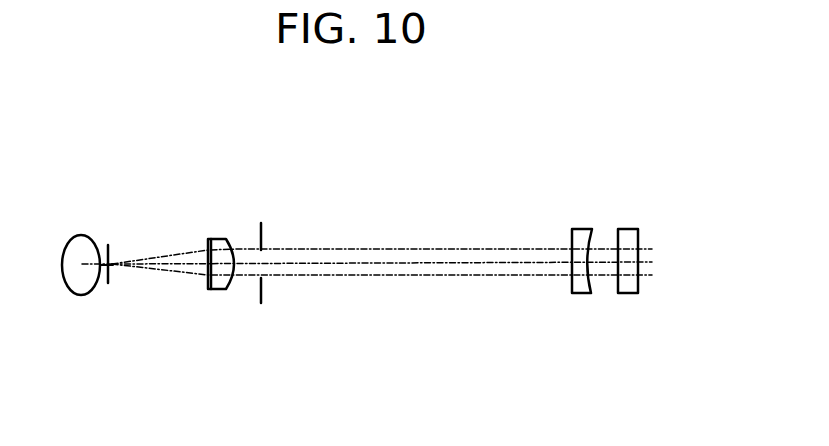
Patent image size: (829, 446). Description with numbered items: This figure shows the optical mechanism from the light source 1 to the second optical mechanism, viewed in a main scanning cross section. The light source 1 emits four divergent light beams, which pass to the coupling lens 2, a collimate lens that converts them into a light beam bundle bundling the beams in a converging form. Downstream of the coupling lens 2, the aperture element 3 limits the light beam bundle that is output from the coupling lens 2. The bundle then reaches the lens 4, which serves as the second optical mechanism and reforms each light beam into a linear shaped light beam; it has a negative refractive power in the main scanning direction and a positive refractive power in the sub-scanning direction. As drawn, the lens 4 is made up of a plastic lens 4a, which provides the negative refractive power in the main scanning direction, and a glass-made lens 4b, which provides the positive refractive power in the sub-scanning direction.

The light source 1 is at (82, 297).
The coupling lens 2 is at (220, 290).
The aperture element 3 is at (262, 300).
The lens 4 is at (645, 218).
The plastic lens 4a is at (582, 293).
The glass-made lens 4b is at (628, 293).